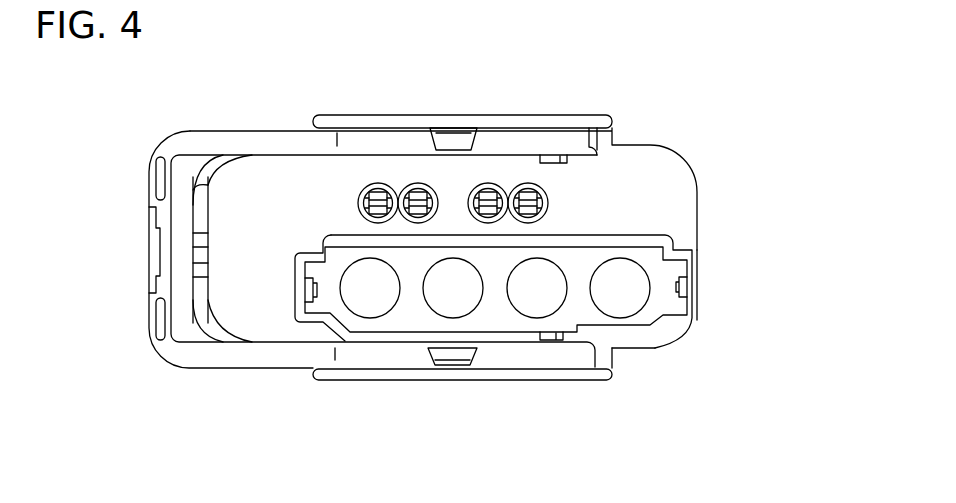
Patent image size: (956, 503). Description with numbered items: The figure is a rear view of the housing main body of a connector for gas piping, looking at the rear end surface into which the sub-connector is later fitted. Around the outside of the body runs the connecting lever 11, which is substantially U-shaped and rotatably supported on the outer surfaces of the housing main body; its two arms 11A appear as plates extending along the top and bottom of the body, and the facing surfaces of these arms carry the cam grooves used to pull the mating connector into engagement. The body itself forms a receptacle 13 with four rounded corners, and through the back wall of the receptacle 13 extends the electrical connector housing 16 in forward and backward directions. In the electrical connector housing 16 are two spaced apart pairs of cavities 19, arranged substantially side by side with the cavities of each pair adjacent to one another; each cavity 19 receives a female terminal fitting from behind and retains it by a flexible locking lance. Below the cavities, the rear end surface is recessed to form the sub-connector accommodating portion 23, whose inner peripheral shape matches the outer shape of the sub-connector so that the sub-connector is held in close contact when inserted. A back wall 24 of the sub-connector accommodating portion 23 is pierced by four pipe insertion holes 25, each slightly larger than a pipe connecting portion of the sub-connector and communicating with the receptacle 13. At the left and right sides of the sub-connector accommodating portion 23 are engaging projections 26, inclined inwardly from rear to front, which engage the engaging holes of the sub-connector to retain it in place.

The connecting lever 11 is at (212, 380).
The arms 11A is at (387, 140).
The receptacle 13 is at (672, 182).
The electrical connector housing 16 is at (492, 168).
The cavities 19 is at (378, 190).
The sub-connector accommodating portion 23 is at (622, 322).
The back wall 24 is at (494, 313).
The pipe insertion holes 25 is at (360, 308).
The engaging projections 26 is at (316, 297).